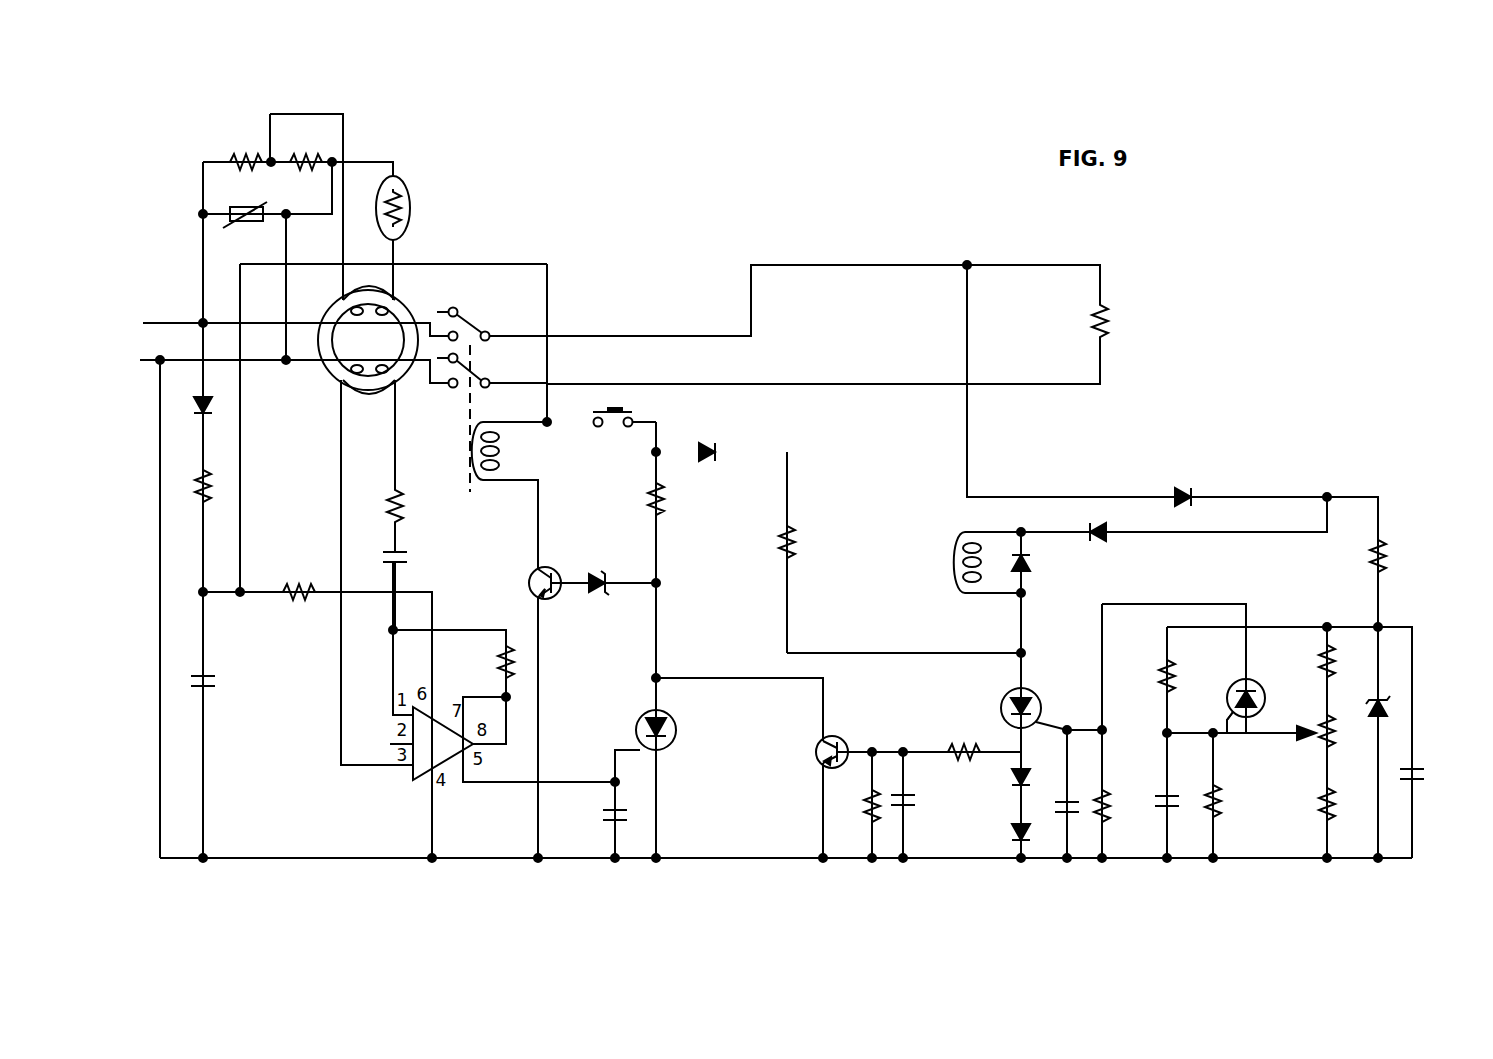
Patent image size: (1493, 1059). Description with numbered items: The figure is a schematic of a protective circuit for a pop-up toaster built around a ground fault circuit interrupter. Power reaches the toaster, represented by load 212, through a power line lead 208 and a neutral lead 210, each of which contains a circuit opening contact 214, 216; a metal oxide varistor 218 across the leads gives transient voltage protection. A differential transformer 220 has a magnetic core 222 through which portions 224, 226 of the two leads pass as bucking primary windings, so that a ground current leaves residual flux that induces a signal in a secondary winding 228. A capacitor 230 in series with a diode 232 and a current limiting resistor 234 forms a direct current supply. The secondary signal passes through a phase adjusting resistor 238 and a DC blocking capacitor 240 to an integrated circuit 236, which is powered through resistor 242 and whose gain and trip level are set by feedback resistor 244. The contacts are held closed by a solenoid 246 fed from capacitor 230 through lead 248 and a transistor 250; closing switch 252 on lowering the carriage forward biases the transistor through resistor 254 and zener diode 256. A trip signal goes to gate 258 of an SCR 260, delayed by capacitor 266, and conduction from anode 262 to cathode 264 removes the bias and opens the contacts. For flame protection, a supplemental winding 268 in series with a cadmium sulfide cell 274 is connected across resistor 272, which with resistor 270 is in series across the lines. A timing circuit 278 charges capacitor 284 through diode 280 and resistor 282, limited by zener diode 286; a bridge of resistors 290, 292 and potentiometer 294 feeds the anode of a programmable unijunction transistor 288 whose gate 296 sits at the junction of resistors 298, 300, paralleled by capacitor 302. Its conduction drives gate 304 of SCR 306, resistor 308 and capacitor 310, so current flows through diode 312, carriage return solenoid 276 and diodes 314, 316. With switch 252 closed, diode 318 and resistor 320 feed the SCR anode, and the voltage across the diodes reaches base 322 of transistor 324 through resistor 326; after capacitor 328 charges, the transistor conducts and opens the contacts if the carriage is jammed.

The power line lead 208 is at (176, 318).
The neutral lead 210 is at (142, 358).
The load 212 is at (1110, 320).
The circuit opening contact 214 is at (486, 331).
The circuit opening contact 216 is at (486, 388).
The metal oxide varistor 218 is at (235, 207).
The differential transformer 220 is at (414, 296).
The magnetic core 222 is at (337, 388).
The primary winding 224 is at (348, 331).
The primary winding 226 is at (398, 372).
The secondary winding 228 is at (386, 396).
The capacitor 230 is at (216, 682).
The diode 232 is at (215, 405).
The current limiting resistor 234 is at (212, 487).
The integrated circuit 236 is at (418, 792).
The phase adjusting resistor 238 is at (404, 506).
The DC blocking capacitor 240 is at (410, 560).
The resistor 242 is at (298, 585).
The resistor 244 is at (496, 661).
The solenoid 246 is at (500, 451).
The lead 248 is at (553, 329).
The transistor 250 is at (559, 576).
The switch 252 is at (636, 412).
The resistor 254 is at (665, 498).
The zener diode 256 is at (594, 574).
The gate 258 is at (616, 748).
The SCR 260 is at (678, 742).
The anode 262 is at (682, 722).
The cathode 264 is at (660, 760).
The capacitor 266 is at (603, 818).
The supplemental winding 268 is at (356, 300).
The resistor 270 is at (237, 152).
The resistor 272 is at (312, 152).
The cadmium sulfide cell 274 is at (412, 188).
The carriage return solenoid 276 is at (960, 566).
The timing circuit 278 is at (1408, 603).
The diode 280 is at (1185, 485).
The resistor 282 is at (1388, 553).
The capacitor 284 is at (1426, 775).
The zener diode 286 is at (1368, 706).
The programmable unijunction transistor 288 is at (1263, 700).
The resistor 290 is at (1338, 666).
The resistor 292 is at (1318, 805).
The potentiometer 294 is at (1318, 748).
The gate 296 is at (1226, 722).
The resistor 298 is at (1160, 680).
The resistor 300 is at (1222, 803).
The capacitor 302 is at (1155, 800).
The gate 304 is at (1040, 718).
The SCR 306 is at (1002, 710).
The resistor 308 is at (1112, 805).
The capacitor 310 is at (1062, 800).
The diode 312 is at (1092, 546).
The diode 314 is at (1012, 783).
The diode 316 is at (1012, 837).
The diode 318 is at (713, 445).
The resistor 320 is at (795, 542).
The base 322 is at (862, 746).
The transistor 324 is at (816, 757).
The resistor 326 is at (958, 746).
The capacitor 328 is at (918, 798).